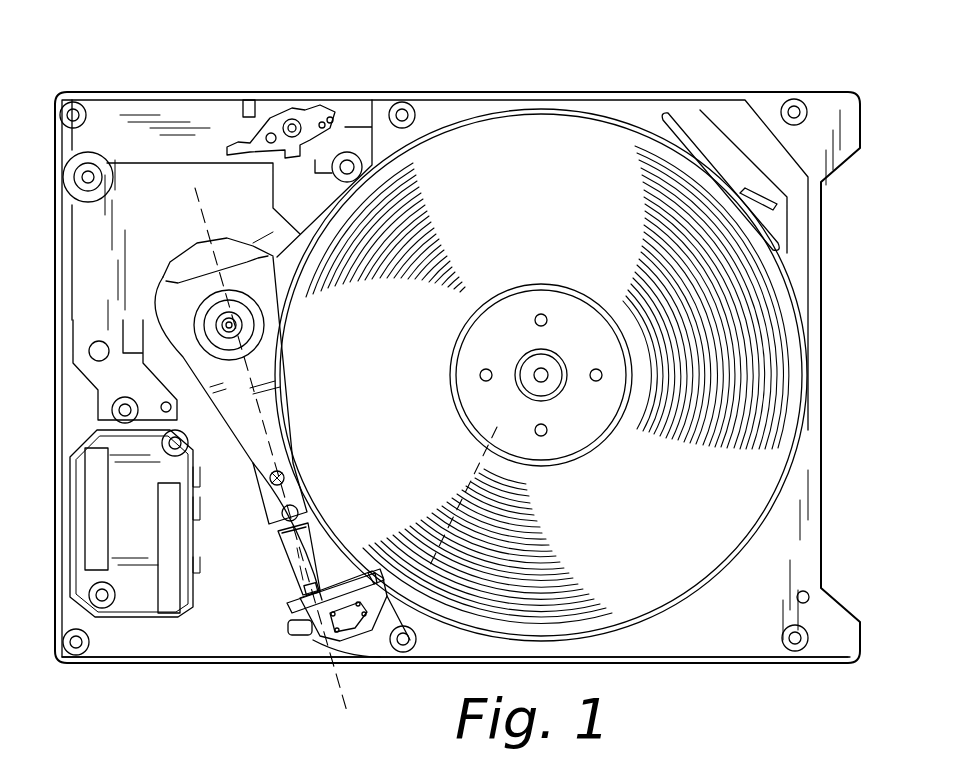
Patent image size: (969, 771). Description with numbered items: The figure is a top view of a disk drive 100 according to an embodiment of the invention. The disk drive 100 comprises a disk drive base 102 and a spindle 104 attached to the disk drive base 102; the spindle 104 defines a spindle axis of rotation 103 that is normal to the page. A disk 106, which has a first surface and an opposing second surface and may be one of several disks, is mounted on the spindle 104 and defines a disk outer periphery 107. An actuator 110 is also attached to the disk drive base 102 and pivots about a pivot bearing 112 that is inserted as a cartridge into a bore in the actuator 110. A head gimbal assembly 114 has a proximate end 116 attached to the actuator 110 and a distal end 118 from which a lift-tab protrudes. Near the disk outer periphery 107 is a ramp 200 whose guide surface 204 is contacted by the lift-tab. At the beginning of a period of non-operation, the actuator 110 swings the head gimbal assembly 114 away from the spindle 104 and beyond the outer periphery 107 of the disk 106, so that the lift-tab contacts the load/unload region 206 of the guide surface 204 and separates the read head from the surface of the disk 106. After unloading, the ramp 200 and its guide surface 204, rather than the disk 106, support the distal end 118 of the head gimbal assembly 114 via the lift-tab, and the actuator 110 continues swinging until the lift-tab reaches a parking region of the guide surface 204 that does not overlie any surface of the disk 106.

The disk drive 100 is at (325, 65).
The disk drive base 102 is at (656, 95).
The spindle axis of rotation 103 is at (538, 372).
The spindle 104 is at (565, 422).
The disk 106 is at (712, 467).
The disk outer periphery 107 is at (762, 540).
The actuator 110 is at (278, 421).
The pivot bearing 112 is at (243, 335).
The head gimbal assembly 114 is at (298, 540).
The proximate end 116 is at (282, 514).
The distal end 118 is at (304, 589).
The ramp 200 is at (318, 632).
The guide surface 204 is at (326, 598).
The load/unload region 206 is at (374, 574).